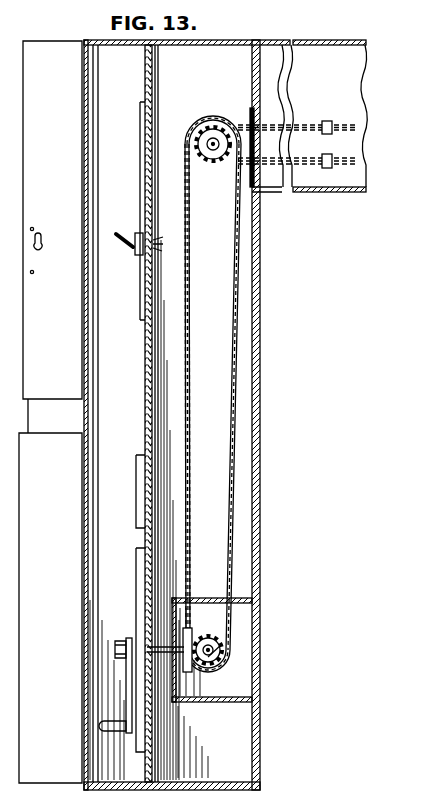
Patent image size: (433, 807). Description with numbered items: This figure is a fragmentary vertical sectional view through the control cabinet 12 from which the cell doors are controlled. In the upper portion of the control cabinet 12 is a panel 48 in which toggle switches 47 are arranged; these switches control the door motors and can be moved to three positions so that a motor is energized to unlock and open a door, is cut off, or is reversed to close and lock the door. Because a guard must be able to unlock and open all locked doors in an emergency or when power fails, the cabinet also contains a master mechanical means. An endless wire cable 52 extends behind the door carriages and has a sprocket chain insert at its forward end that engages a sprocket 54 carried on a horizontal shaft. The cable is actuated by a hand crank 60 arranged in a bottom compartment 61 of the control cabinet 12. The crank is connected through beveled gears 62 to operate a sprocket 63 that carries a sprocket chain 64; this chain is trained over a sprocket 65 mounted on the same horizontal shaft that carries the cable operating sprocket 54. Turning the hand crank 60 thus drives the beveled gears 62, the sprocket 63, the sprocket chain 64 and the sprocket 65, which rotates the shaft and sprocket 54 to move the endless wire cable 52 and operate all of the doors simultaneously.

The control cabinet 12 is at (261, 433).
The toggle switches 47 is at (123, 230).
The panel 48 is at (143, 144).
The endless wire cable 52 is at (336, 124).
The sprocket 54 is at (213, 160).
The hand crank 60 is at (127, 699).
The bottom compartment 61 is at (125, 603).
The beveled gears 62 is at (229, 658).
The sprocket 63 is at (216, 632).
The sprocket chain 64 is at (240, 362).
The sprocket 65 is at (199, 118).